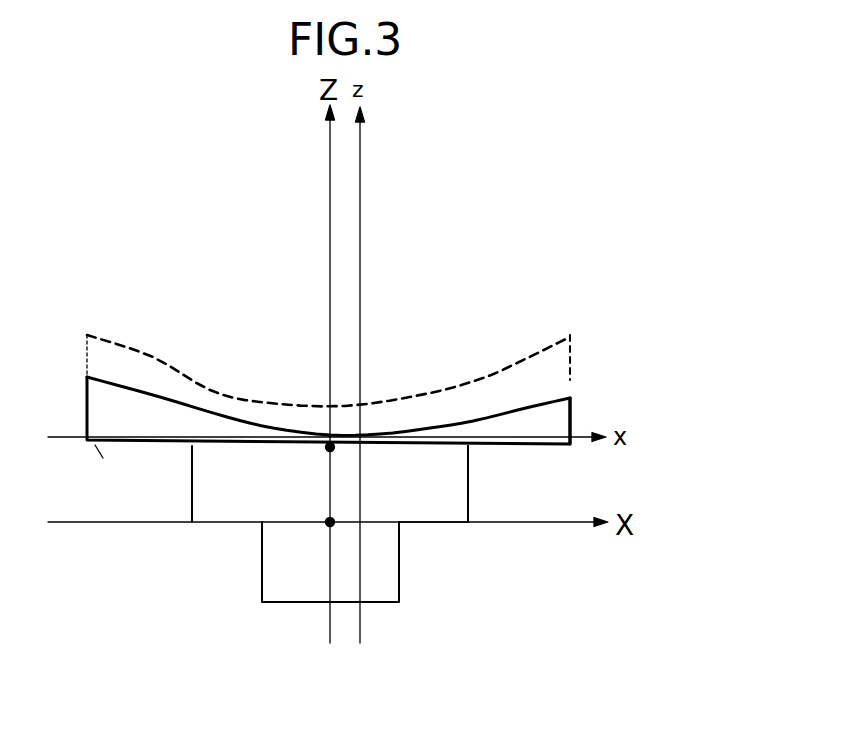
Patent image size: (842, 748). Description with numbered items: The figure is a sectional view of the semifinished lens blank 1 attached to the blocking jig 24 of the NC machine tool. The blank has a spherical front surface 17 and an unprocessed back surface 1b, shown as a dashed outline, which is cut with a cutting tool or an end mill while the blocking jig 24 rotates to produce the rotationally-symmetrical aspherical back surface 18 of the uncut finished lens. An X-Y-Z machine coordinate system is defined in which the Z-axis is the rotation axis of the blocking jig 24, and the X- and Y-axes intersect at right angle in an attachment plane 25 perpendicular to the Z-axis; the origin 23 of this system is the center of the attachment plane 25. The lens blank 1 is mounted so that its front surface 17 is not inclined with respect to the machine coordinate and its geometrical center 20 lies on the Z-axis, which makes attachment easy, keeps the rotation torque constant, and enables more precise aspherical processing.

The semifinished lens blank 1 is at (545, 368).
The back surface 1b is at (437, 393).
The front surface 17 is at (515, 447).
The back surface 18 is at (488, 420).
The geometrical center 20 is at (328, 448).
The origin 23 is at (328, 524).
The blocking jig 24 is at (445, 503).
The attachment plane 25 is at (427, 527).